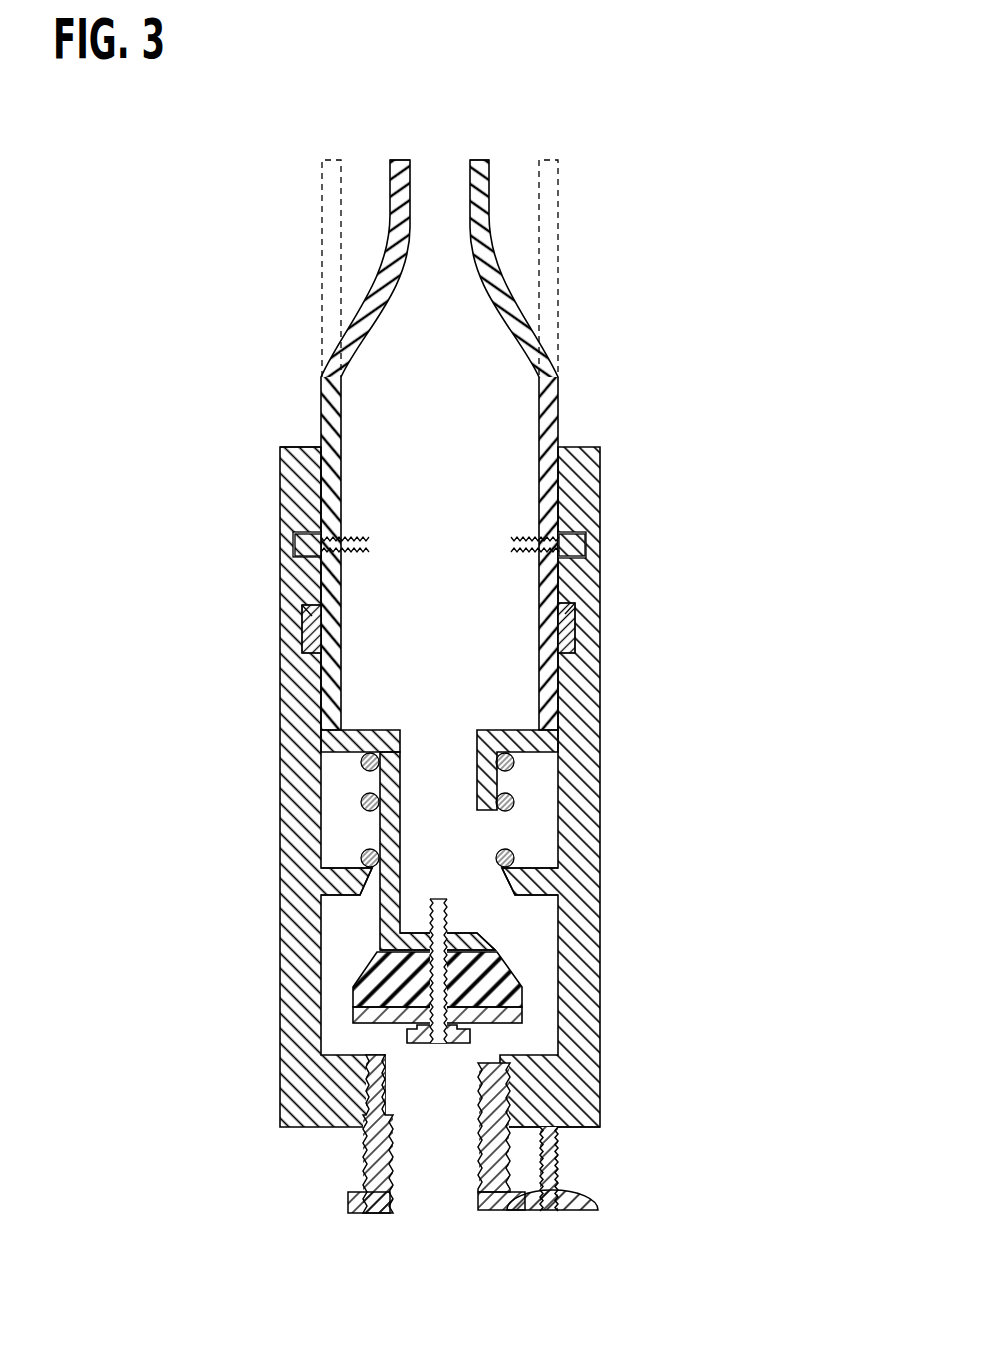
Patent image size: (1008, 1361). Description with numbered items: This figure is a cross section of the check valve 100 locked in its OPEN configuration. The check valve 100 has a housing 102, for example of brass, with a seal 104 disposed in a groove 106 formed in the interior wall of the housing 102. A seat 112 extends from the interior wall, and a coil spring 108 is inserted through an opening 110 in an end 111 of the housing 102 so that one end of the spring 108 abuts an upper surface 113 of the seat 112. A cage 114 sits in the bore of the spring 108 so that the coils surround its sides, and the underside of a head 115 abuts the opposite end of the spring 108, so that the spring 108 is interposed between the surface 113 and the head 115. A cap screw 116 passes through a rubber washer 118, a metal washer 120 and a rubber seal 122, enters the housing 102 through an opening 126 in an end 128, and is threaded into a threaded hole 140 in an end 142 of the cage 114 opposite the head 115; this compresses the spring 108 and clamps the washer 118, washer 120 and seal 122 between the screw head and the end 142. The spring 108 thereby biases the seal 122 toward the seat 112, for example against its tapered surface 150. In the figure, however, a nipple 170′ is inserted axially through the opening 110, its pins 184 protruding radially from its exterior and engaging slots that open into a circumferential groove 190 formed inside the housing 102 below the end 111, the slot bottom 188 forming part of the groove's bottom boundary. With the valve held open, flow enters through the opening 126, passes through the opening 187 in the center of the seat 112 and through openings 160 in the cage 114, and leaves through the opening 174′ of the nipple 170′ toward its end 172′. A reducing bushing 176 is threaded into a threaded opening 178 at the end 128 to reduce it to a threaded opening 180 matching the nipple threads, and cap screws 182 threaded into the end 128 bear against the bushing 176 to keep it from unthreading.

The check valve 100 is at (758, 137).
The housing 102 is at (585, 705).
The seal 104 is at (575, 623).
The groove 106 is at (303, 617).
The coil spring 108 is at (362, 762).
The opening 110 is at (321, 447).
The end 111 is at (283, 455).
The seat 112 is at (337, 882).
The upper surface 113 is at (530, 870).
The cage 114 is at (385, 826).
The head 115 is at (357, 740).
The cap screw 116 is at (442, 897).
The washer 118 is at (408, 1030).
The washer 120 is at (512, 1017).
The seal 122 is at (507, 980).
The opening 126 is at (443, 1128).
The end 128 is at (590, 1127).
The threaded hole 140 is at (448, 928).
The end 142 is at (357, 988).
The tapered surface 150 is at (503, 892).
The openings 160 is at (465, 818).
The nipple 170′ is at (483, 158).
The end 172′ is at (398, 160).
The opening 174′ is at (448, 173).
The reducing bushing 176 is at (365, 1158).
The threaded opening 178 is at (370, 1053).
The threaded opening 180 is at (478, 1128).
The cap screws 182 is at (560, 1167).
The pins 184 is at (298, 545).
The opening 187 is at (380, 908).
The bottom 188 is at (283, 560).
The circumferential groove 190 is at (436, 541).